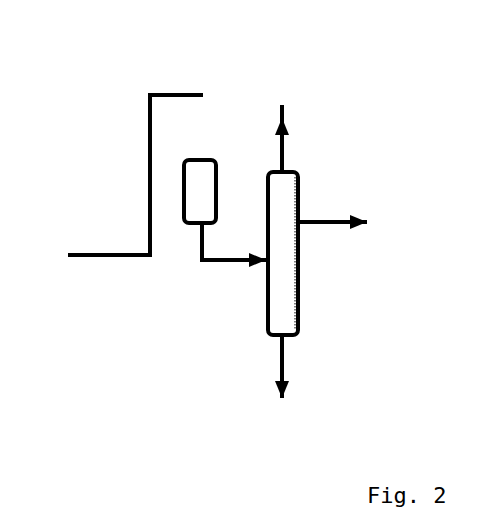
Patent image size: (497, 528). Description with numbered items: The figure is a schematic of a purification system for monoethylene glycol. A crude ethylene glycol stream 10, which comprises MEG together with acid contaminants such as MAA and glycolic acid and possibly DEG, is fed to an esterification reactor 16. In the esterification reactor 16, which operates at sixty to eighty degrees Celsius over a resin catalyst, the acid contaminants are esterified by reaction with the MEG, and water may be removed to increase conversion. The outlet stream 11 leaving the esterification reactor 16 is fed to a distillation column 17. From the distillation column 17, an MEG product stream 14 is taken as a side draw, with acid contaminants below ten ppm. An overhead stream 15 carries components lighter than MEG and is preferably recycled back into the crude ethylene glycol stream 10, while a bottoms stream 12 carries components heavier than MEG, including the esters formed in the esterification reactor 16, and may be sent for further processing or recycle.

The crude ethylene glycol stream 10 is at (81, 232).
The outlet stream 11 is at (217, 274).
The bottoms stream 12 is at (299, 362).
The MEG product stream 14 is at (330, 234).
The overhead stream 15 is at (298, 147).
The esterification reactor 16 is at (204, 185).
The distillation column 17 is at (273, 313).